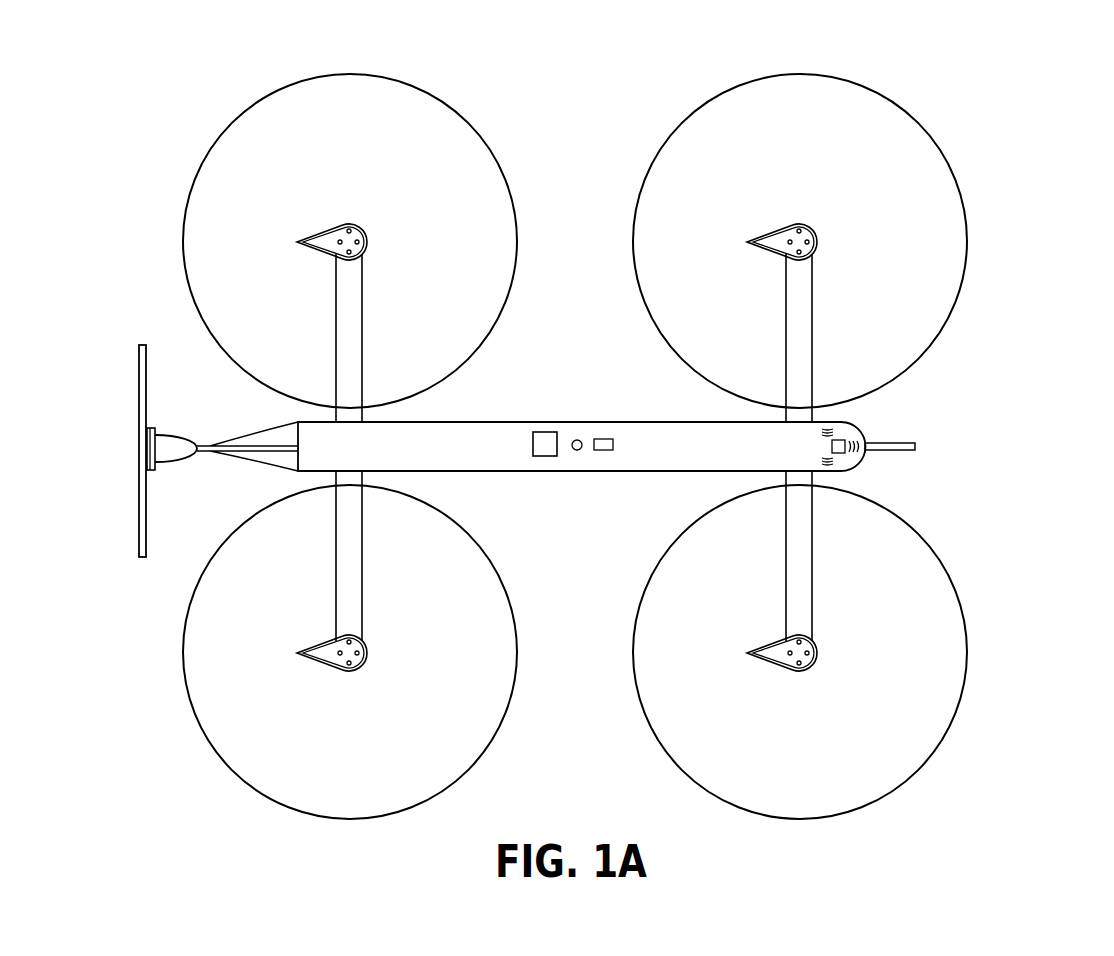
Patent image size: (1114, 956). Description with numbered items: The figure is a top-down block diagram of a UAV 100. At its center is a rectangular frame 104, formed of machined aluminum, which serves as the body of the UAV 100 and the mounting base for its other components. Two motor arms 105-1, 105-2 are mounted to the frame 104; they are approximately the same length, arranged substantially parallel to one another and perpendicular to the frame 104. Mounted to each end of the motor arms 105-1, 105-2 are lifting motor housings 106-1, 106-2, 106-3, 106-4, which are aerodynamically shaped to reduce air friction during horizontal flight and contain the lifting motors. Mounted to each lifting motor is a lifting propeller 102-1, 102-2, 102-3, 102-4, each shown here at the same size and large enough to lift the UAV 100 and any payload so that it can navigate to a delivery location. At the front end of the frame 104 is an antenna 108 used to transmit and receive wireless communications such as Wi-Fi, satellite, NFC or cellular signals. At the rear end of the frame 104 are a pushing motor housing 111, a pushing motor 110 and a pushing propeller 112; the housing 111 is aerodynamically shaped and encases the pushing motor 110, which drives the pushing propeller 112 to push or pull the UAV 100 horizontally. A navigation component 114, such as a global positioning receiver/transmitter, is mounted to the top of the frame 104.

The UAV 100 is at (1008, 128).
The lifting propeller 102-1 is at (860, 118).
The lifting propeller 102-2 is at (918, 565).
The lifting propeller 102-3 is at (205, 705).
The lifting propeller 102-4 is at (410, 118).
The frame 104 is at (653, 437).
The motor arm 105-1 is at (797, 326).
The motor arm 105-2 is at (348, 326).
The lifting motor housing 106-1 is at (782, 237).
The lifting motor housing 106-2 is at (780, 657).
The lifting motor housing 106-3 is at (330, 665).
The lifting motor housing 106-4 is at (332, 237).
The antenna 108 is at (908, 443).
The pushing motor 110 is at (152, 447).
The pushing motor housing 111 is at (170, 438).
The pushing propeller 112 is at (140, 527).
The navigation component 114 is at (550, 457).